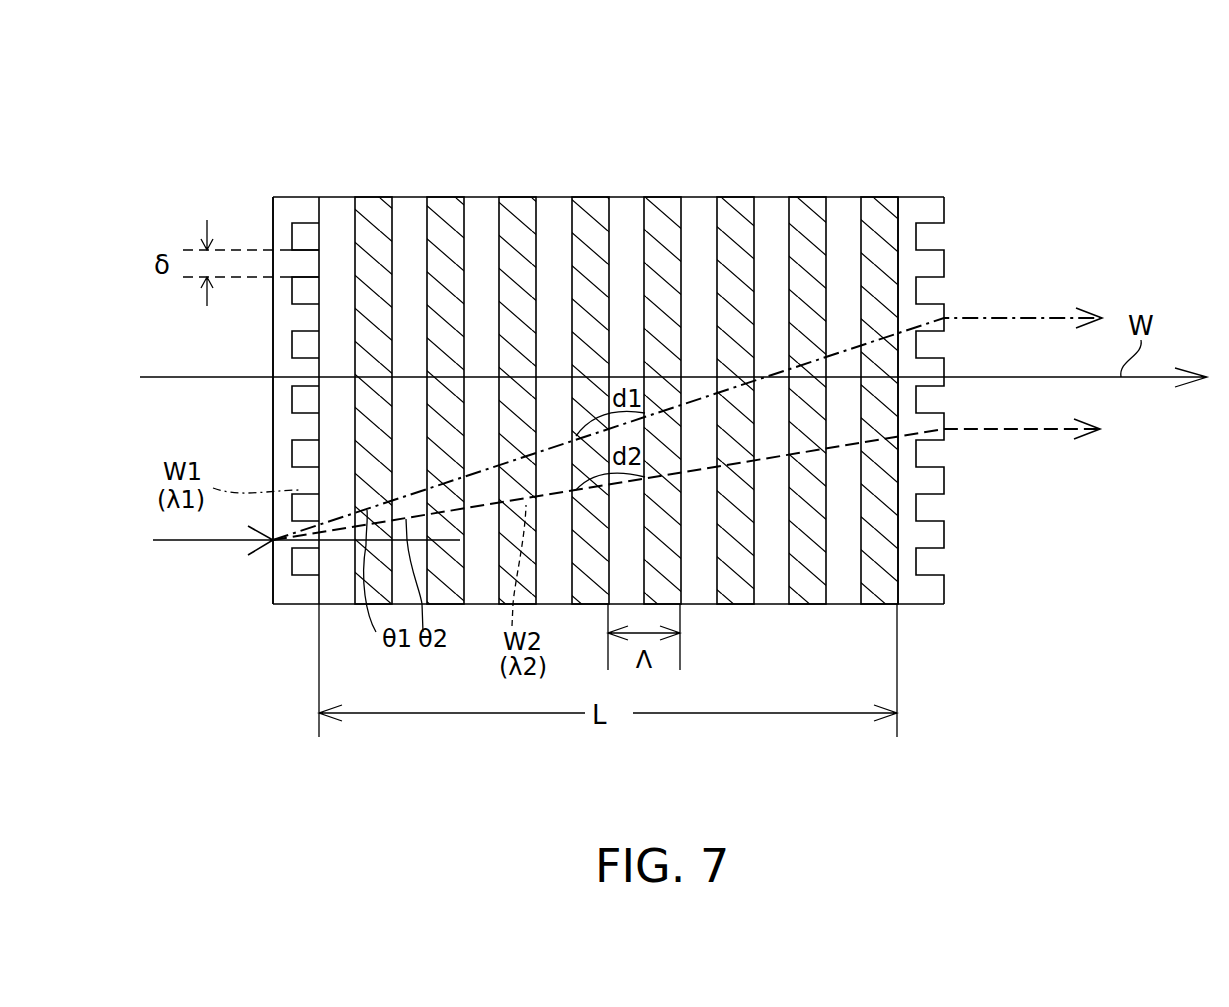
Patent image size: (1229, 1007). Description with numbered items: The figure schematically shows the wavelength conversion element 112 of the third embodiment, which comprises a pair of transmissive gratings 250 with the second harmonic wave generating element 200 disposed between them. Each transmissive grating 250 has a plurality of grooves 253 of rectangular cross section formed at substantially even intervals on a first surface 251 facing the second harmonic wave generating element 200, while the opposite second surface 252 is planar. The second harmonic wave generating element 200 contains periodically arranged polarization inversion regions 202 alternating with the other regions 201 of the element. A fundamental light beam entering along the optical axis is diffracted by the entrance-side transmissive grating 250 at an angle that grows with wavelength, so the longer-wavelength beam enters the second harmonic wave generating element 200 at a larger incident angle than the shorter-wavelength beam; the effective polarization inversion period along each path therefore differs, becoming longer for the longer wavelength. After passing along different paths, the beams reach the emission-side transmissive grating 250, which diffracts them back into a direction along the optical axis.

The wavelength conversion element 112 is at (913, 66).
The second harmonic wave generating element 200 is at (887, 130).
The first region (low refractive index layer) 201 is at (555, 197).
The polarization inversion region 202 is at (743, 197).
The transmissive grating 250 is at (300, 197).
The first surface 251 is at (977, 252).
The second surface 252 is at (224, 325).
The grooves 253 is at (300, 452).